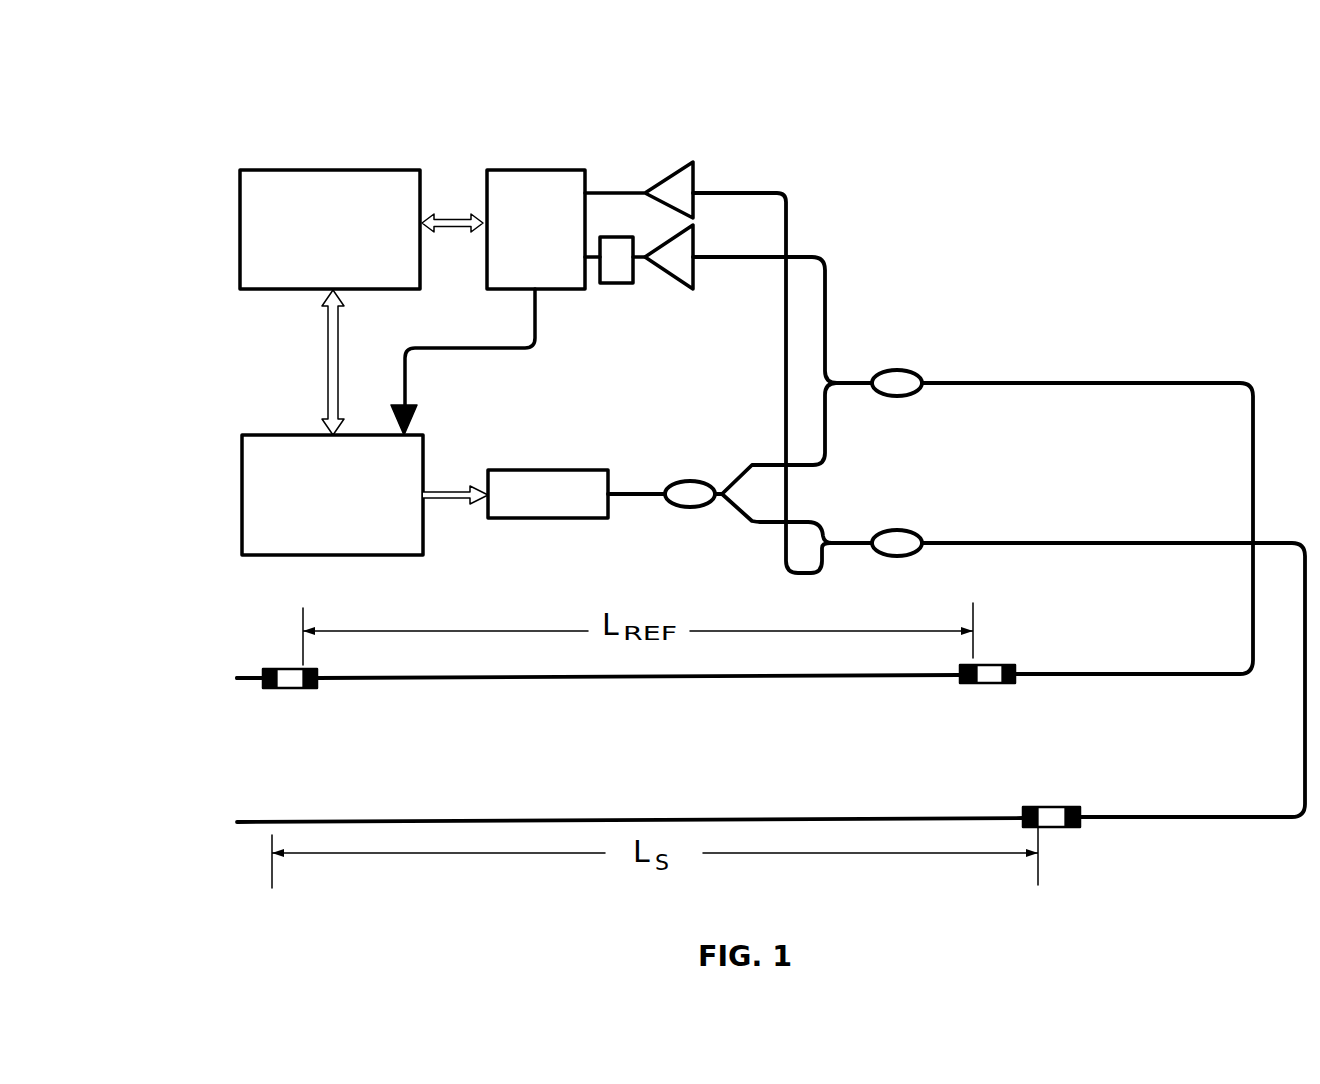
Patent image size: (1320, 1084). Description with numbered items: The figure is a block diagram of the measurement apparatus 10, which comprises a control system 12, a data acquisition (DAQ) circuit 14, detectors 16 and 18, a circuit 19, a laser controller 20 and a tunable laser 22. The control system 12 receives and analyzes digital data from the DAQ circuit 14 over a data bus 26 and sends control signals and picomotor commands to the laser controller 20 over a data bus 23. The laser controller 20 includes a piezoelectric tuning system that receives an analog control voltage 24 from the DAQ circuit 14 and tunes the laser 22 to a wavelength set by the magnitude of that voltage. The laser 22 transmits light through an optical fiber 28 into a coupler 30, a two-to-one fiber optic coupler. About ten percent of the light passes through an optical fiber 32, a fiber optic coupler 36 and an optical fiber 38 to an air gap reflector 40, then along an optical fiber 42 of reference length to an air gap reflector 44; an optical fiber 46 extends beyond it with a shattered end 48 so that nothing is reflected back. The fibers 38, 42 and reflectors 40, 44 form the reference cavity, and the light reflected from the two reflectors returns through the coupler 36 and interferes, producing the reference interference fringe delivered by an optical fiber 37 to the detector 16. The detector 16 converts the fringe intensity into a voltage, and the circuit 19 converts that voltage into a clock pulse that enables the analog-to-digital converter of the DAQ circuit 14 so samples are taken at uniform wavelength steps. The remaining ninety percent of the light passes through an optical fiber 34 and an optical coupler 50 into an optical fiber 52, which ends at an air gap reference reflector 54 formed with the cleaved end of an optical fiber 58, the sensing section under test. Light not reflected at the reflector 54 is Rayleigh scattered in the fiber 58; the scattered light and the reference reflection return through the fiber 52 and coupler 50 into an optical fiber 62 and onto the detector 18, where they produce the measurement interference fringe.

The apparatus 10 is at (797, 165).
The control system 12 is at (310, 168).
The data acquisition (DAQ) circuit 14 is at (523, 170).
The detector 16 is at (685, 290).
The detector 18 is at (657, 180).
The circuit 19 is at (613, 287).
The laser controller 20 is at (330, 556).
The tunable laser 22 is at (515, 468).
The data bus 23 is at (328, 355).
The analog control voltage 24 is at (452, 350).
The data bus 26 is at (447, 217).
The optical fiber 28 is at (620, 487).
The coupler 30 is at (690, 480).
The optical fiber 32 is at (827, 422).
The optical fiber 34 is at (807, 517).
The fiber optic coupler 36 is at (900, 368).
The optical fiber 37 is at (762, 258).
The optical fiber 38 is at (1248, 475).
The air gap reflector 40 is at (997, 686).
The optical fiber 42 is at (478, 680).
The air gap reflector 44 is at (307, 690).
The optical fiber 46 is at (257, 680).
The end 48 is at (237, 678).
The optical coupler 50 is at (900, 530).
The optical fiber 52 is at (1305, 782).
The air gap reflector 54 is at (1070, 828).
The optical fiber 58 is at (543, 820).
The optical fiber 62 is at (785, 232).